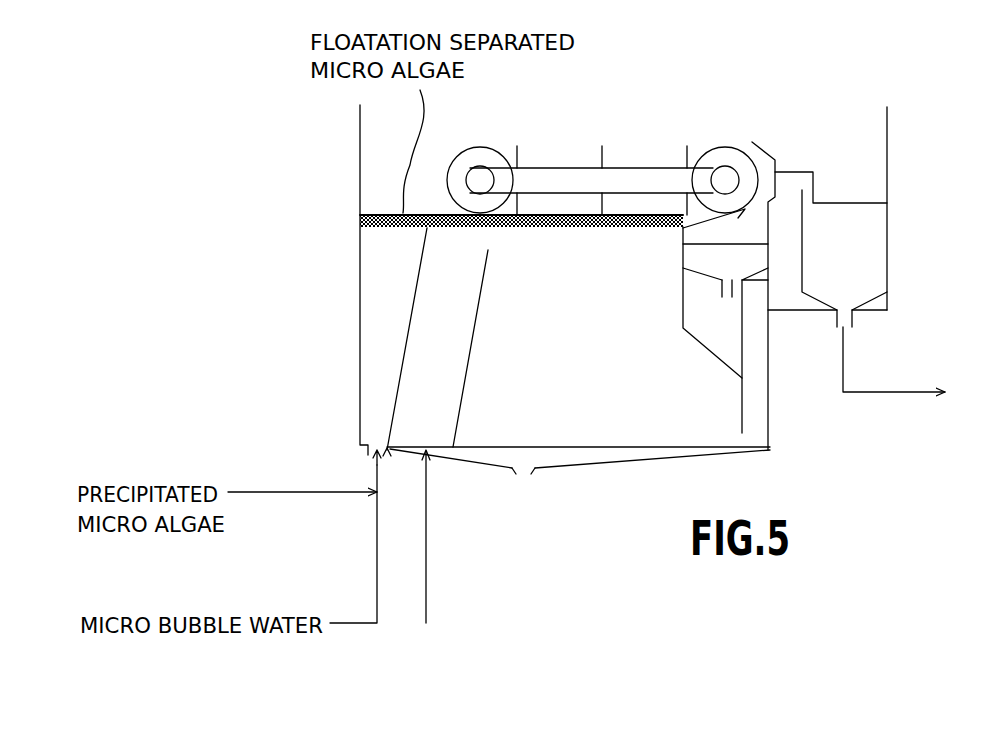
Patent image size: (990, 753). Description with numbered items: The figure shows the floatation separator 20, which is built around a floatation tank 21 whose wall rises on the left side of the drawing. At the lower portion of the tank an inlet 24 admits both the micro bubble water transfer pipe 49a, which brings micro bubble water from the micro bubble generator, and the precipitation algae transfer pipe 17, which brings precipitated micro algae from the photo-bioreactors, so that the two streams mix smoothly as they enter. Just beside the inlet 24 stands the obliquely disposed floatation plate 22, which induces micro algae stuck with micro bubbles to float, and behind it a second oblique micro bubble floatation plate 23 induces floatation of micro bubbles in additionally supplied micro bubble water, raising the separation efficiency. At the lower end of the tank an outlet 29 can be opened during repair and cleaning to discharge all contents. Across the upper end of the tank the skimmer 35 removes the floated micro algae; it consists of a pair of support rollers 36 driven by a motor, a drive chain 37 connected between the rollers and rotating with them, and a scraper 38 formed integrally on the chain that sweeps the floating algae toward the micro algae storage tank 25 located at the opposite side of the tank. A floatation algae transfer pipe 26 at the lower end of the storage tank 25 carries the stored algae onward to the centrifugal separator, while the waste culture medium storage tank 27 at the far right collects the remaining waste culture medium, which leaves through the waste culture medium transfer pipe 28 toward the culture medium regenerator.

The precipitation algae transfer pipe 17 is at (323, 492).
The floatation separator 20 is at (330, 128).
The floatation tank 21 is at (360, 335).
The floatation plate 22 is at (420, 256).
The micro bubble floatation plate 23 is at (476, 322).
The inlet 24 is at (372, 458).
The micro algae storage tank 25 is at (710, 262).
The floatation algae transfer pipe 26 is at (720, 292).
The waste culture medium storage tank 27 is at (842, 248).
The waste culture medium transfer pipe 28 is at (847, 353).
The outlet 29 is at (522, 470).
The skimmer 35 is at (723, 117).
The support rollers 36 is at (492, 143).
The drive chain 37 is at (648, 166).
The scraper 38 is at (687, 158).
The micro bubble water transfer pipe 49a is at (378, 535).